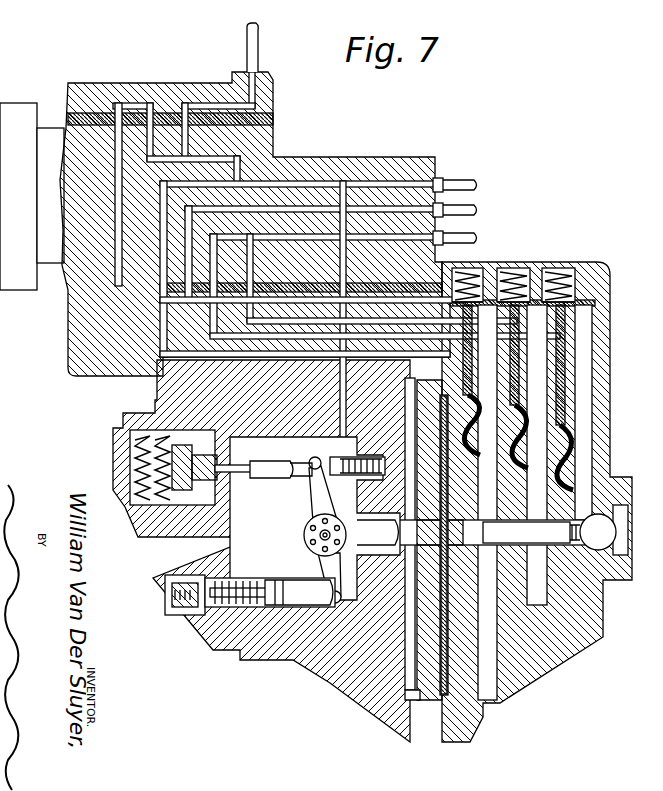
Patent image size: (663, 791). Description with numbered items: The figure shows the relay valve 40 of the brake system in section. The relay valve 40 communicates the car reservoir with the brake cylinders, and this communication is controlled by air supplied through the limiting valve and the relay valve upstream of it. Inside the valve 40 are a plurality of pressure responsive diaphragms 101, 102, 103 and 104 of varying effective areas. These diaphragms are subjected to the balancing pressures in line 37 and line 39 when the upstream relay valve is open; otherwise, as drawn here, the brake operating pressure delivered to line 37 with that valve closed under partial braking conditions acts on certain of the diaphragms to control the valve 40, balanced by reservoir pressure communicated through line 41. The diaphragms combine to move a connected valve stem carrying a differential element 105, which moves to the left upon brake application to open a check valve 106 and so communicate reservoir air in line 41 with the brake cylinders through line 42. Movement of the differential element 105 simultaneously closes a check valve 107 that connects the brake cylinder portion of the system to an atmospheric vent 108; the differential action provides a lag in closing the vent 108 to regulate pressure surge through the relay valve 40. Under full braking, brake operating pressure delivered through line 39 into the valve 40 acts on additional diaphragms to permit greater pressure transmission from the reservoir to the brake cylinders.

The line 37 is at (468, 180).
The line 39 is at (249, 40).
The relay valve 40 is at (418, 129).
The line 41 is at (478, 203).
The line 42 is at (478, 236).
The pressure responsive diaphragm 101 is at (440, 412).
The pressure responsive diaphragm 102 is at (487, 424).
The pressure responsive diaphragm 103 is at (530, 442).
The pressure responsive diaphragm 104 is at (560, 458).
The differential element 105 is at (331, 565).
The check valve 106 is at (165, 470).
The check valve 107 is at (261, 642).
The atmospheric vent 108 is at (220, 652).